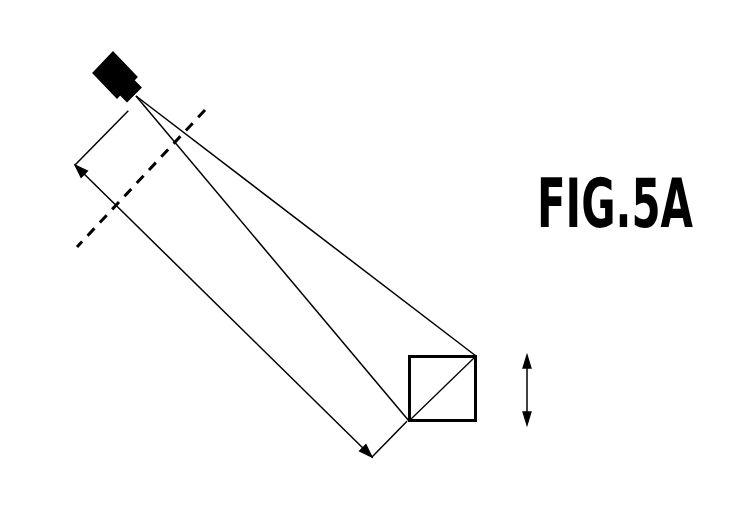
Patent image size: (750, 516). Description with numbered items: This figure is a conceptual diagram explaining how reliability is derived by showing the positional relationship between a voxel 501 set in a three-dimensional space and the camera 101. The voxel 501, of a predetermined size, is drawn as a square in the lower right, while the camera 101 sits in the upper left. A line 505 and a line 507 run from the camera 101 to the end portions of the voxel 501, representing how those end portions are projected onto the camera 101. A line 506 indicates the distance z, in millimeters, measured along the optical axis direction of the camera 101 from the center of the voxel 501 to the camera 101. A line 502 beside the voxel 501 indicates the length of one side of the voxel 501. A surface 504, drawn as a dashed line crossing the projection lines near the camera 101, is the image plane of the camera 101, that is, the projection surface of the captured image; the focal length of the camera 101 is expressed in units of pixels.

The camera 101 is at (122, 65).
The voxel 501 is at (440, 423).
The line 502 is at (530, 388).
The surface 504 is at (206, 112).
The line 505 is at (333, 245).
The line 506 is at (173, 260).
The line 507 is at (195, 163).